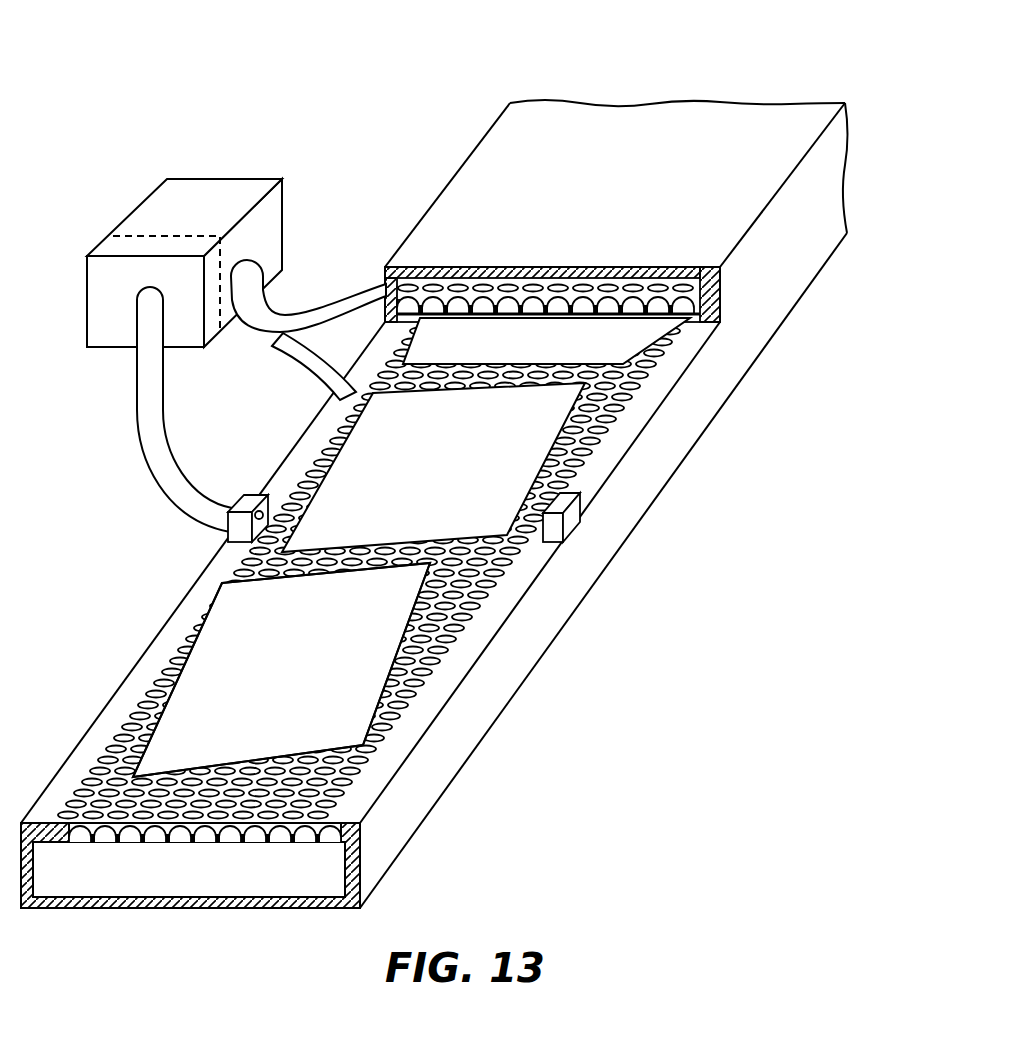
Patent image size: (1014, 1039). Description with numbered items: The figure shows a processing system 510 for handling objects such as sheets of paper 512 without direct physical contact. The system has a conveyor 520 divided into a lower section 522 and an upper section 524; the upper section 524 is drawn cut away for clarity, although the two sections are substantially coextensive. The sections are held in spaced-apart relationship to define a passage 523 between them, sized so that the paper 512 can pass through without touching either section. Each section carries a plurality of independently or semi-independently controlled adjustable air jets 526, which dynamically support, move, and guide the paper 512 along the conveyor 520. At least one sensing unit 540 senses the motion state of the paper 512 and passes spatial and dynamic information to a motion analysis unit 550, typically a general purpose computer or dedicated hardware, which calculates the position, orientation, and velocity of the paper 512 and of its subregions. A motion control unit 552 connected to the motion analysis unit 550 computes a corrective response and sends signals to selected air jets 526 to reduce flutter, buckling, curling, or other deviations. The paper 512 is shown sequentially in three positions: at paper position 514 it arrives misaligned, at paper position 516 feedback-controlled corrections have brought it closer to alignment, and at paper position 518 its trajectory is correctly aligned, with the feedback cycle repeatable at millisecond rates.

The processing system 510 is at (158, 69).
The paper 512 is at (193, 697).
The paper position 514 is at (255, 622).
The paper position 516 is at (372, 447).
The paper position 518 is at (485, 330).
The conveyor 520 is at (636, 611).
The lower section 522 is at (495, 695).
The passage 523 is at (700, 324).
The upper section 524 is at (765, 230).
The air jets 526 is at (364, 776).
The sensing unit 540 is at (228, 495).
The motion analysis unit 550 is at (123, 250).
The motion control unit 552 is at (207, 207).